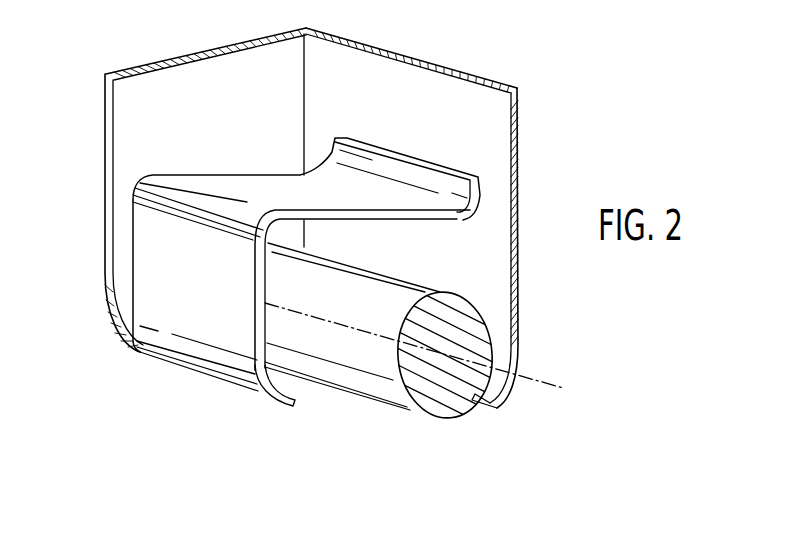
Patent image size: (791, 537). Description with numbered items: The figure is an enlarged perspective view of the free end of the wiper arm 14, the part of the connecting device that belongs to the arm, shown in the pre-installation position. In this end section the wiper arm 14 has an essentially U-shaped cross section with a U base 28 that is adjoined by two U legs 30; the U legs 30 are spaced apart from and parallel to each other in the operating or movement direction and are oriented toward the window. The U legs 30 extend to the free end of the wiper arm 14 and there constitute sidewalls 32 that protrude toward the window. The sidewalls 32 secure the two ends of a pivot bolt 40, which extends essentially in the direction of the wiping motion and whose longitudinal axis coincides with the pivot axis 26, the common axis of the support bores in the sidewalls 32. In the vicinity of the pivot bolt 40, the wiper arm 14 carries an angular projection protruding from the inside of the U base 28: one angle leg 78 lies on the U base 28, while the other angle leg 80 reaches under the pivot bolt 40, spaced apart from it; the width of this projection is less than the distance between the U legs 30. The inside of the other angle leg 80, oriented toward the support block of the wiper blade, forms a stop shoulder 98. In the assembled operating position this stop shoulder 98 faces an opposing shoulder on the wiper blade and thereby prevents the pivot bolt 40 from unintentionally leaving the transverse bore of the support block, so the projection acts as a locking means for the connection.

The wiper arm 14 is at (533, 148).
The U base 28 is at (407, 77).
The U legs 30 is at (199, 47).
The sidewalls 32 is at (107, 146).
The angle leg 78 is at (270, 187).
The other angle leg 80 is at (213, 333).
The stop shoulder 98 is at (266, 285).
The pivot bolt 40 is at (362, 388).
The pivot axis 26 is at (543, 371).